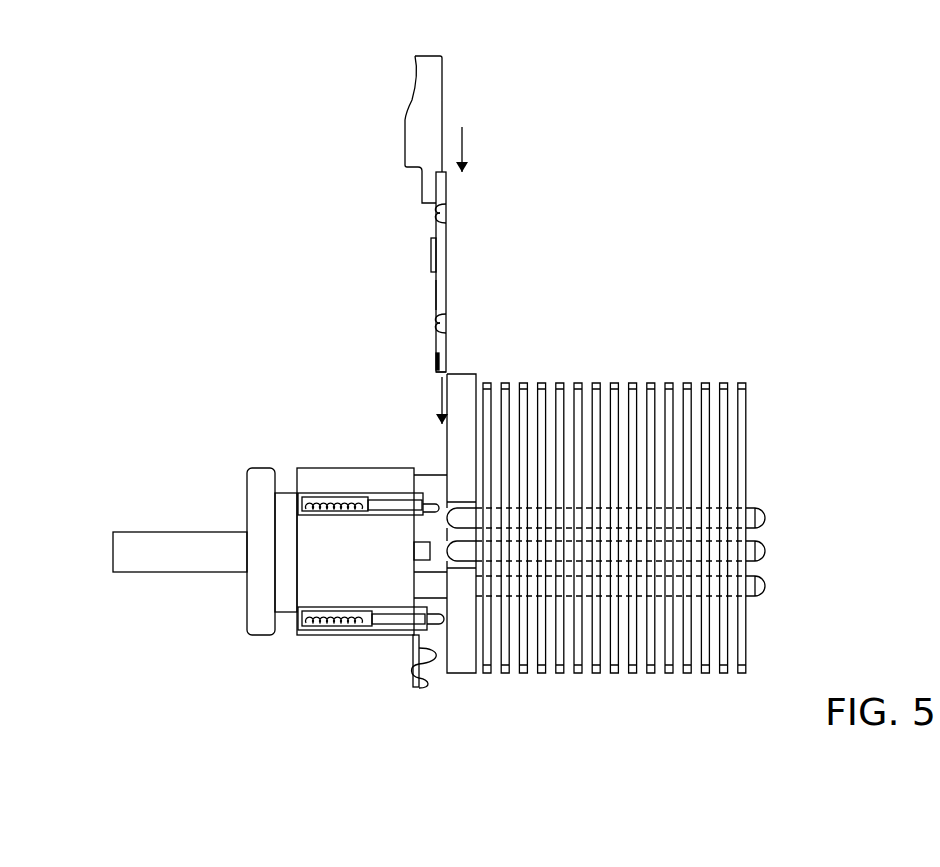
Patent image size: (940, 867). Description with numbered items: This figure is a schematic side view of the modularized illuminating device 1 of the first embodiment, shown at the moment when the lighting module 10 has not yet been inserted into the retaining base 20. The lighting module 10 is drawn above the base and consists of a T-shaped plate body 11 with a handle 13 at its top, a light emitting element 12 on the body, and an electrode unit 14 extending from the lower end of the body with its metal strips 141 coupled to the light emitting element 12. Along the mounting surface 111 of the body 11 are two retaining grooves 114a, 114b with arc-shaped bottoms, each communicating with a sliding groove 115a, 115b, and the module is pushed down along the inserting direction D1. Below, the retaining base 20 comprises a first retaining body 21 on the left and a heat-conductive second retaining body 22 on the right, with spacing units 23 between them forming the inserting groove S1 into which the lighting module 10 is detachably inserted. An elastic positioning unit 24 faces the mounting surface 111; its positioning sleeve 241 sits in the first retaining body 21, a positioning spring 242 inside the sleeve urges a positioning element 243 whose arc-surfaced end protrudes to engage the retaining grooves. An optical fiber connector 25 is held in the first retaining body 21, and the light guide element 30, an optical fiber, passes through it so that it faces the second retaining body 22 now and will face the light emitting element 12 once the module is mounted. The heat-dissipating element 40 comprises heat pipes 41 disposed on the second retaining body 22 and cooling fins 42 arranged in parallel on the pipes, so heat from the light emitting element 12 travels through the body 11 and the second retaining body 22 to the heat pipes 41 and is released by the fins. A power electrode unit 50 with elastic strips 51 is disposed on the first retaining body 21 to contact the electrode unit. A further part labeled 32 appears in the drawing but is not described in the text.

The modularized illuminating device 1 is at (795, 98).
The lighting module 10 is at (381, 129).
The body 11 is at (450, 268).
The light emitting element 12 is at (428, 252).
The handle 13 is at (427, 83).
The electrode unit 14 is at (431, 373).
The mounting surface 111 is at (436, 295).
The retaining groove 114a is at (444, 205).
The sliding groove 115a is at (444, 222).
The retaining groove 114b is at (444, 315).
The sliding groove 115b is at (444, 334).
The metal strips 141 is at (434, 362).
The retaining base 20 is at (359, 514).
The first retaining body 21 is at (317, 466).
The second retaining body 22 is at (467, 372).
The spacing units 23 is at (432, 483).
The elastic positioning unit 24 is at (358, 552).
The positioning sleeve 241 is at (300, 497).
The positioning spring 242 is at (350, 497).
The positioning element 243 is at (398, 500).
The optical fiber connector 25 is at (245, 497).
The light guide element 30 is at (140, 525).
The stopper 32 is at (427, 553).
The heat-dissipating element 40 is at (654, 550).
The heat pipes 41 is at (768, 519).
The cooling fins 42 is at (760, 422).
The power electrode unit 50 is at (416, 696).
The elastic strips 51 is at (413, 664).
The inserting direction D1 is at (479, 149).
The inserting groove S1 is at (442, 683).